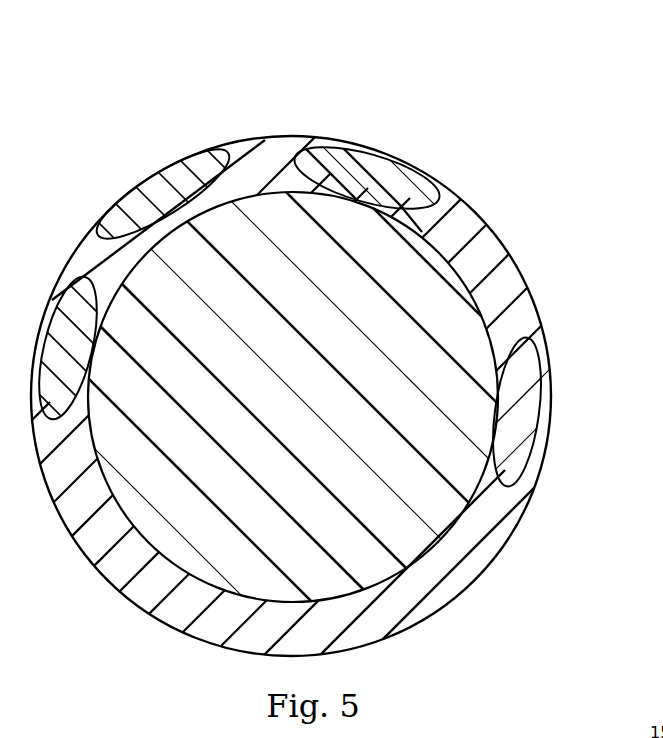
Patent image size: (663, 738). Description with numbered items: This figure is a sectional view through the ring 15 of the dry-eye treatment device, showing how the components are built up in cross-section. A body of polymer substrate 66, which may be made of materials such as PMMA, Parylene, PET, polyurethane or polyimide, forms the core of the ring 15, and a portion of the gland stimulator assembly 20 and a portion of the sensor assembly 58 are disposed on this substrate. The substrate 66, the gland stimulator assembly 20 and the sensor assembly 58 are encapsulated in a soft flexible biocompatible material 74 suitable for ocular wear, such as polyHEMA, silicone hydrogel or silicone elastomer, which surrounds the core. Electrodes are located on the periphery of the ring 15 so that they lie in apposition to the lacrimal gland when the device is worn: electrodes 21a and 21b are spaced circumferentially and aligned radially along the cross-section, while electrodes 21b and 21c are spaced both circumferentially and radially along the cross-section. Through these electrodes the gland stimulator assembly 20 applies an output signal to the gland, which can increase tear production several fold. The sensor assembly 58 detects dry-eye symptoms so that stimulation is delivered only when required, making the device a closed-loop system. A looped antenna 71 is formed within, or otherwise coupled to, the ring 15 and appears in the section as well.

The gland stimulator assembly 20 is at (185, 66).
The ring 15 is at (276, 136).
The soft flexible biocompatible material 74 is at (494, 250).
The polymer substrate 66 is at (278, 412).
The electrode 21a is at (382, 166).
The electrode 21b is at (151, 190).
The electrode 21c is at (86, 355).
The antenna 71 is at (500, 413).
The sensor assembly 58 is at (513, 561).